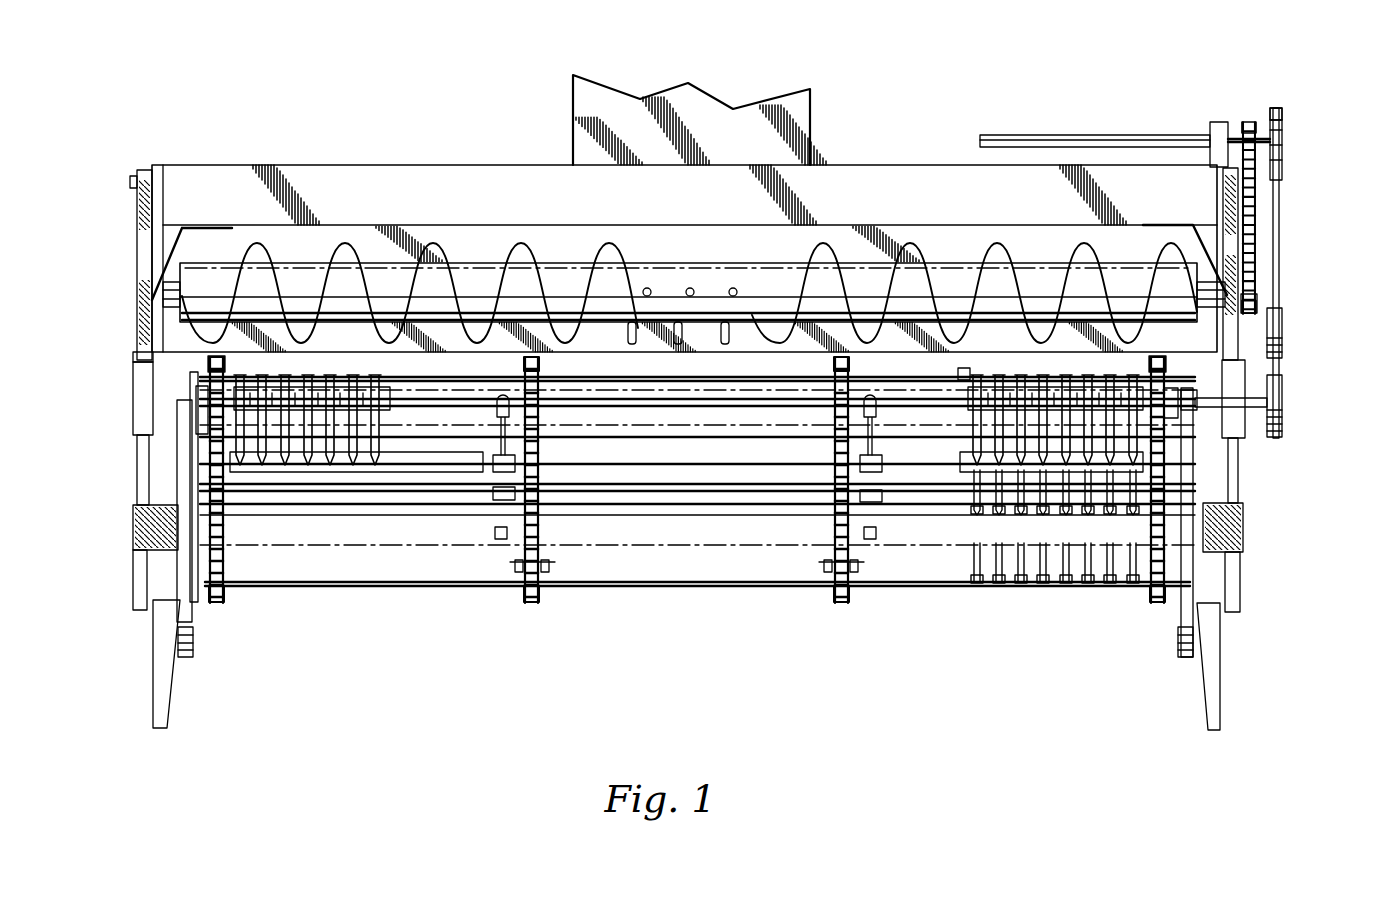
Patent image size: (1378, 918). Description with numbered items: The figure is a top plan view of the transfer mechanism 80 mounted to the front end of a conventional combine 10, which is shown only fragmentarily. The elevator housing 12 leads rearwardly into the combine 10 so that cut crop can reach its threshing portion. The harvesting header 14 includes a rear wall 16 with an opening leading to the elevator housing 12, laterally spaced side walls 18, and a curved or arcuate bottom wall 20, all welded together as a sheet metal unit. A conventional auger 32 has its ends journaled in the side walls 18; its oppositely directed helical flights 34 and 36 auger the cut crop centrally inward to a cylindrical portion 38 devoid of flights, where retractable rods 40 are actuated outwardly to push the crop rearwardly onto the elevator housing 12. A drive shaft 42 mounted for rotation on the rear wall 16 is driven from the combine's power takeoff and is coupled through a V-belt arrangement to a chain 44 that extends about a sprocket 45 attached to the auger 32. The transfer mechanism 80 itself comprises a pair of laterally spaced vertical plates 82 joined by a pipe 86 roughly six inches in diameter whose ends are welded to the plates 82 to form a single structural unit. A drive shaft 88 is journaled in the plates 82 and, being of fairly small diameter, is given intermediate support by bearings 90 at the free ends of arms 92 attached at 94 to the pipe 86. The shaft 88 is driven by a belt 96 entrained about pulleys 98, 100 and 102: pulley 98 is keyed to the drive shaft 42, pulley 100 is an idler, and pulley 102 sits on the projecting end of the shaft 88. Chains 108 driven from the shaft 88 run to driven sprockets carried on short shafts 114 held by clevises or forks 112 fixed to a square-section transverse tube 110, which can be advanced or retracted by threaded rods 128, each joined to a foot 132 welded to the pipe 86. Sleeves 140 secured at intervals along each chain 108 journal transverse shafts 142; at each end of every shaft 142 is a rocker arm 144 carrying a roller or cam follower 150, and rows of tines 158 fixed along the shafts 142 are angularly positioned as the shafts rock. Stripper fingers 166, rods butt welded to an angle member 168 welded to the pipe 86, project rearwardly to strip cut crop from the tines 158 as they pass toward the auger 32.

The combine 10 is at (830, 66).
The elevator housing 12 is at (797, 118).
The harvesting header 14 is at (298, 112).
The rear wall 16 is at (443, 164).
The side walls 18 is at (137, 235).
The bottom wall 20 is at (588, 240).
The auger 32 is at (925, 263).
The helical flight 34 is at (1008, 262).
The helical flight 36 is at (365, 240).
The cylindrical portion 38 is at (697, 262).
The retractable rods 40 is at (690, 288).
The drive shaft 42 is at (1073, 135).
The chain 44 is at (1255, 225).
The sprocket 45 is at (1257, 300).
The transfer mechanism 80 is at (455, 617).
The vertical plates 82 is at (178, 450).
The pipe 86 is at (690, 510).
The drive shaft 88 is at (825, 400).
The bearings 90 is at (502, 392).
The arms 92 is at (490, 466).
The attachment point 94 is at (880, 472).
The belt 96 is at (1282, 250).
The pulley 98 is at (1283, 115).
The idler pulley 100 is at (1283, 345).
The pulley 102 is at (1283, 397).
The chain 108 is at (216, 604).
The transverse tube 110 is at (350, 547).
The clevises 112 is at (522, 568).
The short shaft 114 is at (828, 566).
The rods 128 is at (500, 540).
The foot 132 is at (494, 492).
The sleeves 140 is at (222, 370).
The transverse shafts 142 is at (565, 395).
The rocker arm 144 is at (200, 497).
The cam follower 150 is at (200, 388).
The tines 158 is at (965, 368).
The stripper fingers 166 is at (250, 458).
The angle member 168 is at (345, 458).